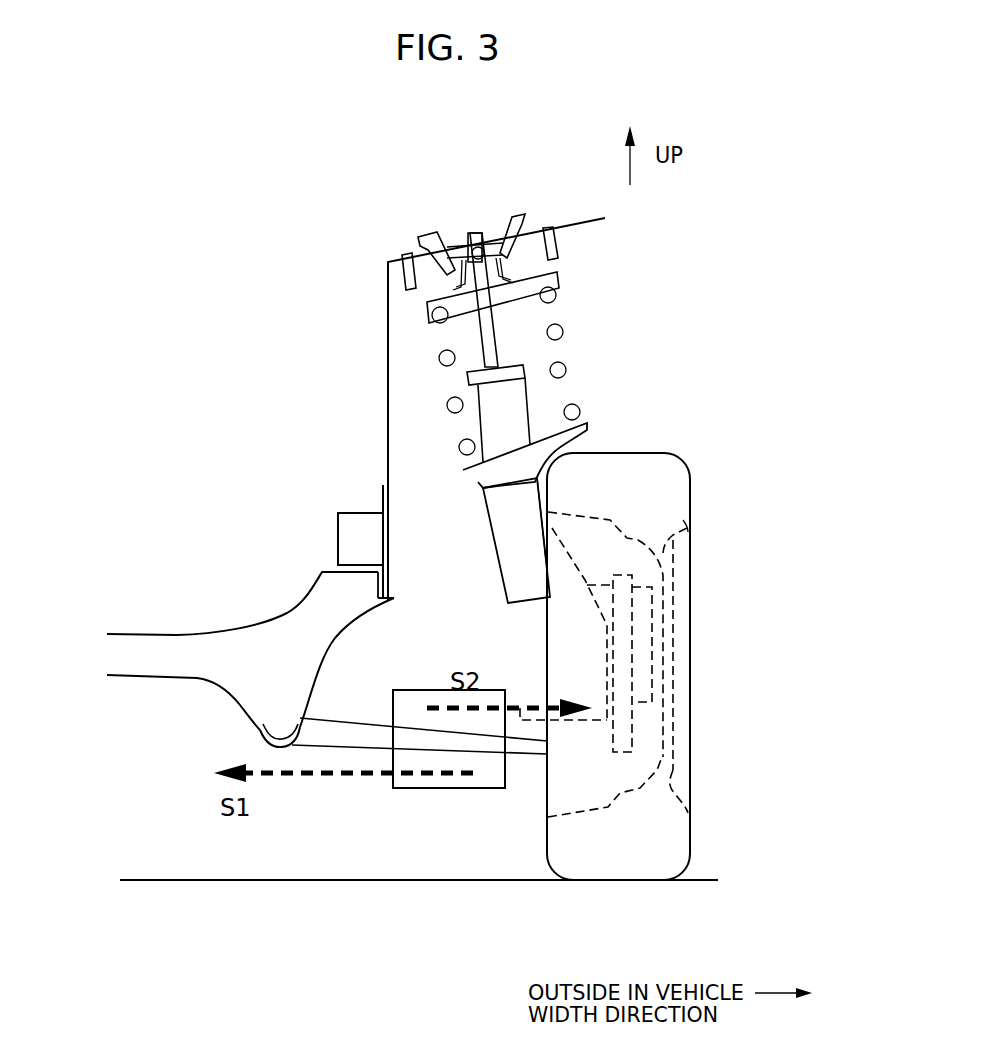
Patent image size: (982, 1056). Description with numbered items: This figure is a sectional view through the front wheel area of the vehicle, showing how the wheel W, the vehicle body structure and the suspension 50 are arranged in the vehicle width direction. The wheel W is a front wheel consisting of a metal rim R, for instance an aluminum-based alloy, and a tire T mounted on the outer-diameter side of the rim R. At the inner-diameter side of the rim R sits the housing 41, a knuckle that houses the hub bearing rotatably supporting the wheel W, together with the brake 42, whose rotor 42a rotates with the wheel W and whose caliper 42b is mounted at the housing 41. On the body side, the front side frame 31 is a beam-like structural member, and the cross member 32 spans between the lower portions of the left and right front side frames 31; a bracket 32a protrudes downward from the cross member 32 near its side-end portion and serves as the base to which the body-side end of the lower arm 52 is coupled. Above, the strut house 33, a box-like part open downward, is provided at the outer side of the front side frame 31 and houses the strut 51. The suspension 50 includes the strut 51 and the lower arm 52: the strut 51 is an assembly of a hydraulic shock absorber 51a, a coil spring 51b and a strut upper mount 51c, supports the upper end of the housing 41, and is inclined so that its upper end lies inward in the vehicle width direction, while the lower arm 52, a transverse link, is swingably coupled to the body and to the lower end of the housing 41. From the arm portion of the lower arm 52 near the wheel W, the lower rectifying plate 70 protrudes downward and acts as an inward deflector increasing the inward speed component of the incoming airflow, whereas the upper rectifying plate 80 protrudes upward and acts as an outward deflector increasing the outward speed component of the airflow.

The front side frame 31 is at (338, 532).
The cross member 32 is at (167, 632).
The bracket 32a is at (270, 724).
The strut house 33 is at (388, 300).
The housing 41 is at (600, 648).
The brake 42 is at (656, 758).
The rotor 42a is at (630, 730).
The caliper 42b is at (652, 687).
The suspension 50 is at (648, 298).
The strut 51 is at (585, 368).
The shock absorber 51a is at (528, 417).
The coil spring 51b is at (592, 352).
The strut upper mount 51c is at (430, 255).
The lower arm 52 is at (332, 750).
The lower rectifying plate 70 is at (467, 788).
The upper rectifying plate 80 is at (405, 715).
The wheel W is at (695, 464).
The tire T is at (690, 490).
The rim R is at (687, 528).